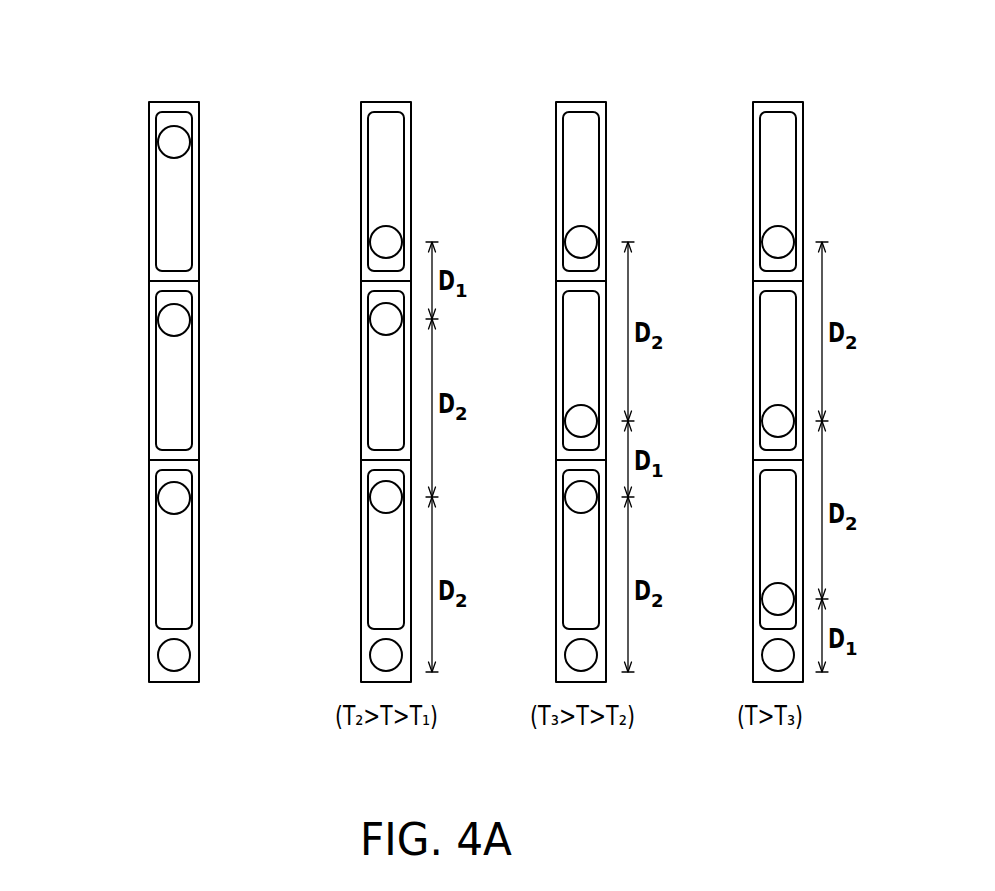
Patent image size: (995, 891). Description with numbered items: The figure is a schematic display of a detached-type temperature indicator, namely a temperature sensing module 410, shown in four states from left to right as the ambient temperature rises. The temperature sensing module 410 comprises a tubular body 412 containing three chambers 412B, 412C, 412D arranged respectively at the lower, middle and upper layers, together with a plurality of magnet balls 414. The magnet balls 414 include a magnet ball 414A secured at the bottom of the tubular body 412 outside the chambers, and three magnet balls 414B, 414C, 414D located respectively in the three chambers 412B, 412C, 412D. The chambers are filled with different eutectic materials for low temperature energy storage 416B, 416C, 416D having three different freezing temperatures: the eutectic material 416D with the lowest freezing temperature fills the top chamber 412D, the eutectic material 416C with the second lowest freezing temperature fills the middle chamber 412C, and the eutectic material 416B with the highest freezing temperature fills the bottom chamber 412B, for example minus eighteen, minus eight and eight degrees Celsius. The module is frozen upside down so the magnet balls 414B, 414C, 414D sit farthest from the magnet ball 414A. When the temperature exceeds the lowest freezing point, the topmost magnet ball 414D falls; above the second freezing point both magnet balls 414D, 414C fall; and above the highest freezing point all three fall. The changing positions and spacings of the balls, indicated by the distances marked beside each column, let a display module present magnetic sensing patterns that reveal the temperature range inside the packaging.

The temperature sensing module 410 is at (177, 84).
The tubular body 412 is at (497, 339).
The first chamber 412D is at (193, 253).
The second chamber 412C is at (193, 428).
The third chamber 412B is at (193, 610).
The magnet balls 414 is at (404, 404).
The magnet ball 414A is at (430, 661).
The fourth magnet ball 414B is at (163, 499).
The third magnet ball 414C is at (163, 322).
The second magnet ball 414D is at (163, 143).
The eutectic material for low temperature energy storage 416B is at (167, 548).
The eutectic material for low temperature energy storage 416C is at (167, 369).
The eutectic material for low temperature energy storage 416D is at (167, 198).